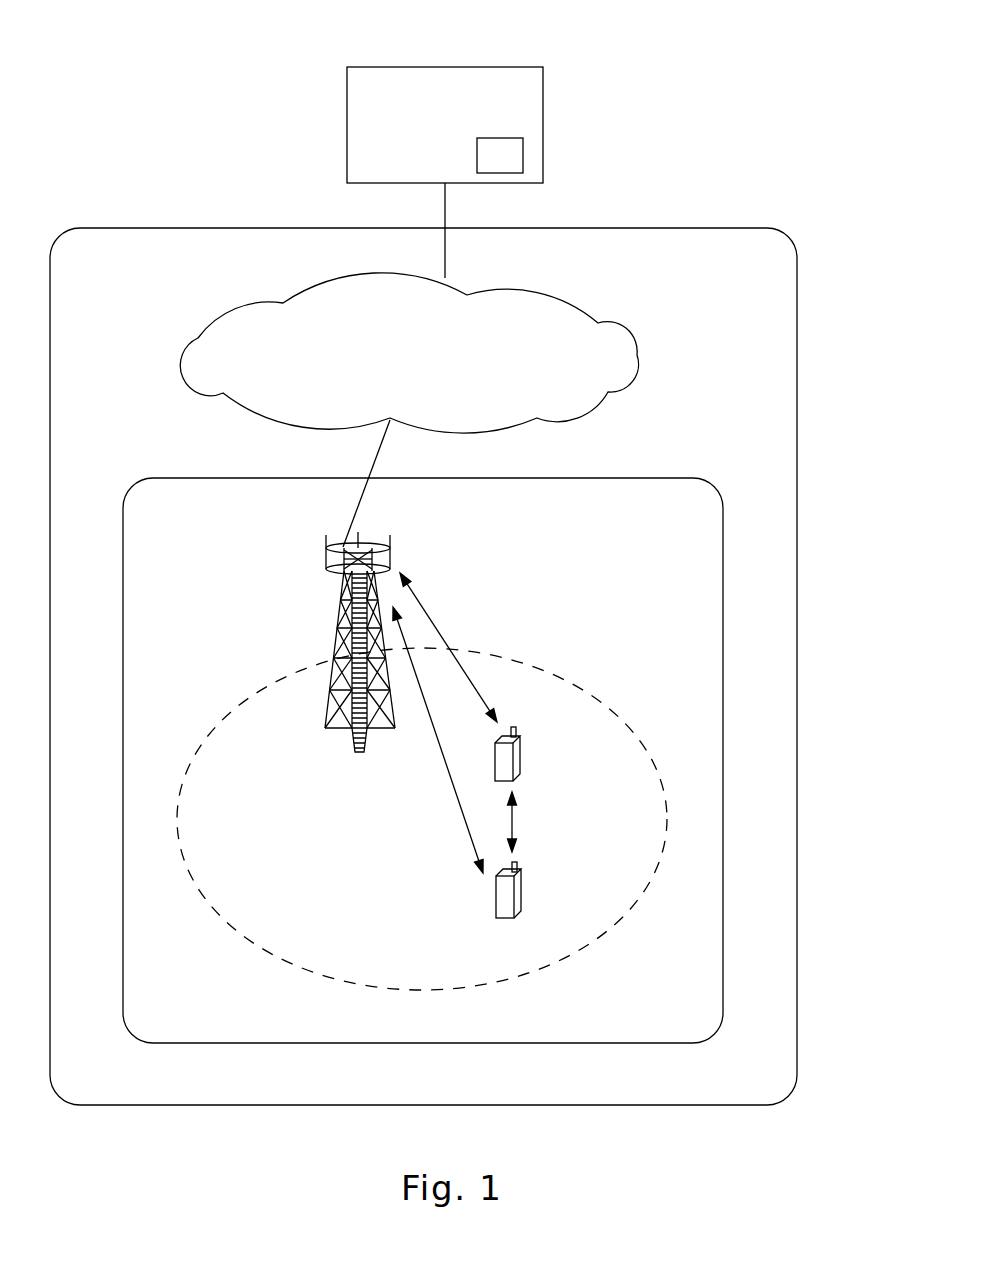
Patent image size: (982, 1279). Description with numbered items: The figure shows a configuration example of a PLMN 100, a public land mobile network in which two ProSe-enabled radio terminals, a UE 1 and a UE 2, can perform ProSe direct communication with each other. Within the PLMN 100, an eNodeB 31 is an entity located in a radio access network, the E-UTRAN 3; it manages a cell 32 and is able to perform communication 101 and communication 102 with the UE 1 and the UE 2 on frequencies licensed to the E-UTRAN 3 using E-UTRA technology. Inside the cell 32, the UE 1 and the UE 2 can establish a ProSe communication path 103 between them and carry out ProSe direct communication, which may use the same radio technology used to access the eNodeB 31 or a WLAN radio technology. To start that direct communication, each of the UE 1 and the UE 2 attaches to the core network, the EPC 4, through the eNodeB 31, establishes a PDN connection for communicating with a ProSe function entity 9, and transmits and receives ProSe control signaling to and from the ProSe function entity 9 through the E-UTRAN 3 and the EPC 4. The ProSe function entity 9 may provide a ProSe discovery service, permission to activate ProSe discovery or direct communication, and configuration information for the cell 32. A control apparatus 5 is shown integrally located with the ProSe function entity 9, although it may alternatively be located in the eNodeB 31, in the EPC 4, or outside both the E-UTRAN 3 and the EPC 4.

The PLMN 100 is at (140, 228).
The ProSe function entity 9 is at (463, 67).
The control apparatus 5 is at (523, 153).
The core network (EPC) 4 is at (643, 340).
The radio access network (E-UTRAN) 3 is at (652, 477).
The eNodeB 31 is at (345, 605).
The cell 32 is at (563, 678).
The UE 1 is at (495, 763).
The UE 2 is at (496, 899).
The communication 101 is at (428, 617).
The communication 102 is at (438, 740).
The ProSe communication path 103 is at (517, 826).